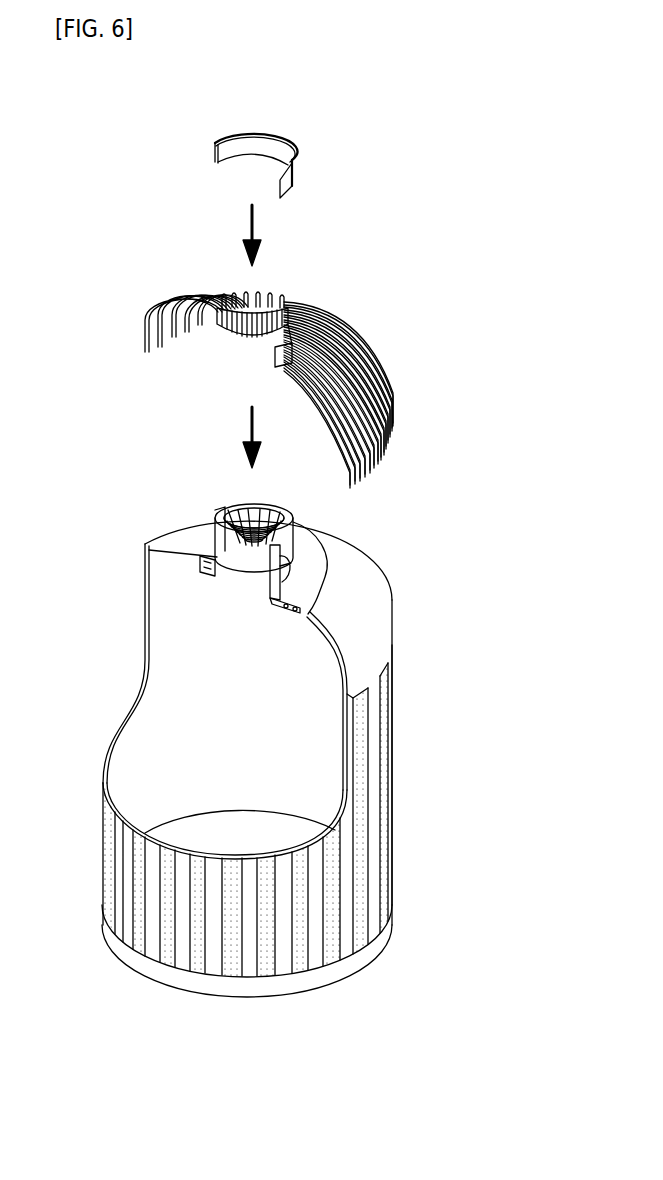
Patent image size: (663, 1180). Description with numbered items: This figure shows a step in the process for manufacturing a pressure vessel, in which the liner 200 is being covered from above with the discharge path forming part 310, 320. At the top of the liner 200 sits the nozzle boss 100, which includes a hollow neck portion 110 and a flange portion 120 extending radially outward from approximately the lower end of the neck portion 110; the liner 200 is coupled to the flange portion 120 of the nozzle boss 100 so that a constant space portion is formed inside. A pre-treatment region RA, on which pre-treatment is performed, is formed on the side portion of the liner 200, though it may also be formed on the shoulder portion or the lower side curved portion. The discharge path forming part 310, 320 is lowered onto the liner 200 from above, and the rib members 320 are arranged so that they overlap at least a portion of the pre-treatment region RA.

The nozzle boss 100 is at (188, 428).
The neck portion 110 is at (218, 512).
The flange portion 120 is at (180, 533).
The liner 200 is at (310, 607).
The discharge path forming part 310 is at (268, 150).
The rib members 320 is at (405, 417).
The pre-treatment region RA is at (140, 913).